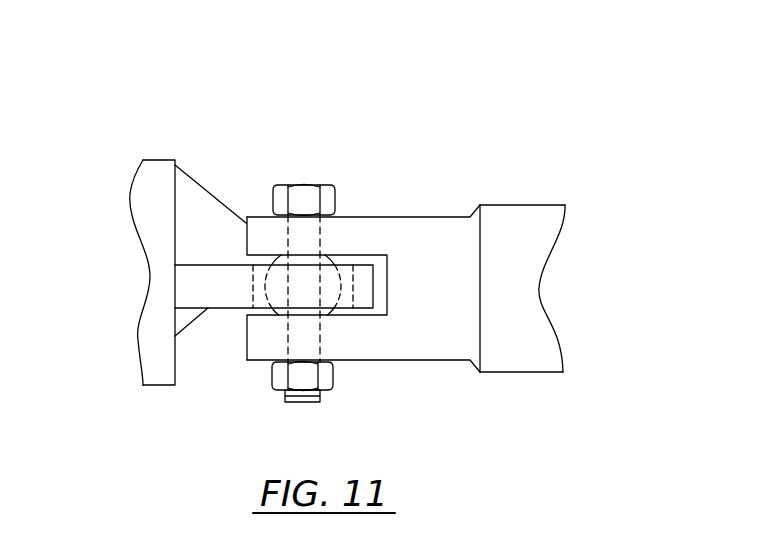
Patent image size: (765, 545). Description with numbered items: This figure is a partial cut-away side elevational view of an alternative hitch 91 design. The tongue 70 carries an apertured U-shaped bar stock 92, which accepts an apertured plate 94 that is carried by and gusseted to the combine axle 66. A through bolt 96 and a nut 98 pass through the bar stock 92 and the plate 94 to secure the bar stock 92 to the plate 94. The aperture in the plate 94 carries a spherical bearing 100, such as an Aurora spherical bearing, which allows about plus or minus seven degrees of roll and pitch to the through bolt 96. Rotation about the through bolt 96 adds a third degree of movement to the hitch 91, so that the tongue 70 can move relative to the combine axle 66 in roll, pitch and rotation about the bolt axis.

The combine axle 66 is at (158, 168).
The tongue 70 is at (512, 215).
The hitch 91 is at (357, 138).
The U-shaped bar stock 92 is at (437, 228).
The plate 94 is at (228, 300).
The through bolt 96 is at (303, 197).
The nut 98 is at (325, 380).
The spherical bearing 100 is at (330, 264).